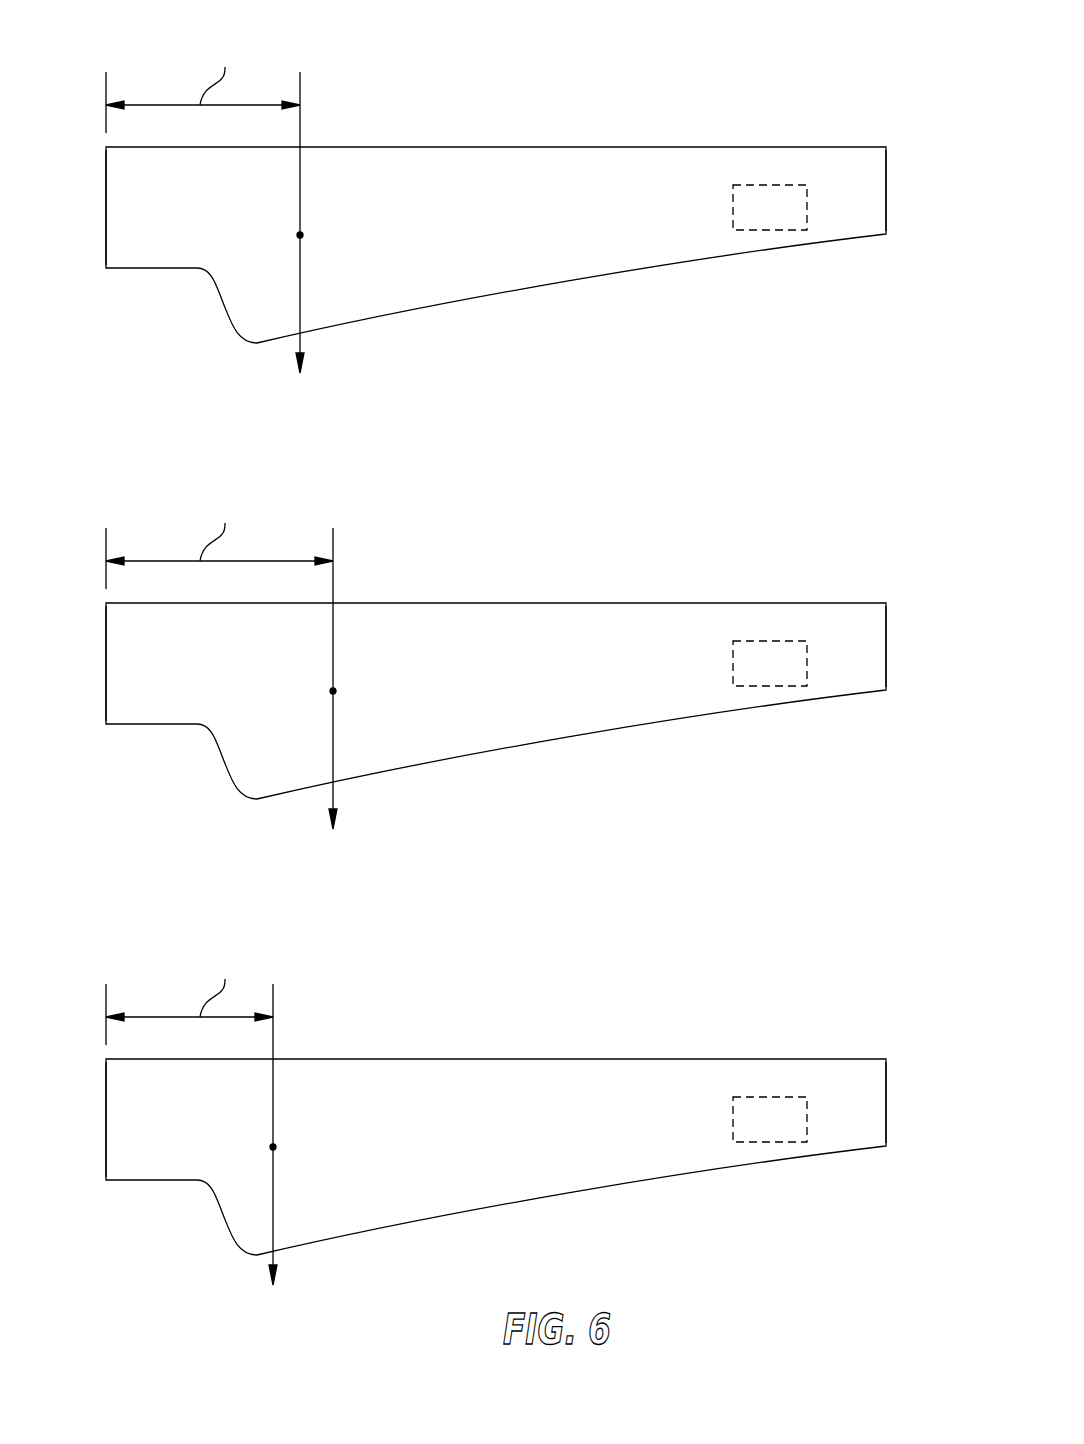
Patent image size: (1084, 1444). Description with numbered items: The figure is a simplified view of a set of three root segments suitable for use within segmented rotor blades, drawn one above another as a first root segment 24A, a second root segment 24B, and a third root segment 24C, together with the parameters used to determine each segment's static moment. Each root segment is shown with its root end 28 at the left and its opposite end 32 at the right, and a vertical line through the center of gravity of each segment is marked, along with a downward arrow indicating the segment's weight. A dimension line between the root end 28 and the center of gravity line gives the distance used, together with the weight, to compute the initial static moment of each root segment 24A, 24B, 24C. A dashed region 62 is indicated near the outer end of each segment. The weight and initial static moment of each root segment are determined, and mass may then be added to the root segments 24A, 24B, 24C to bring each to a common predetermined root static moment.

The first root segment 24A is at (716, 72).
The second root segment 24B is at (716, 528).
The third root segment 24C is at (716, 984).
The root end 28 is at (106, 232).
The blade tip 32 is at (886, 205).
The tuning mass region 62 is at (782, 230).